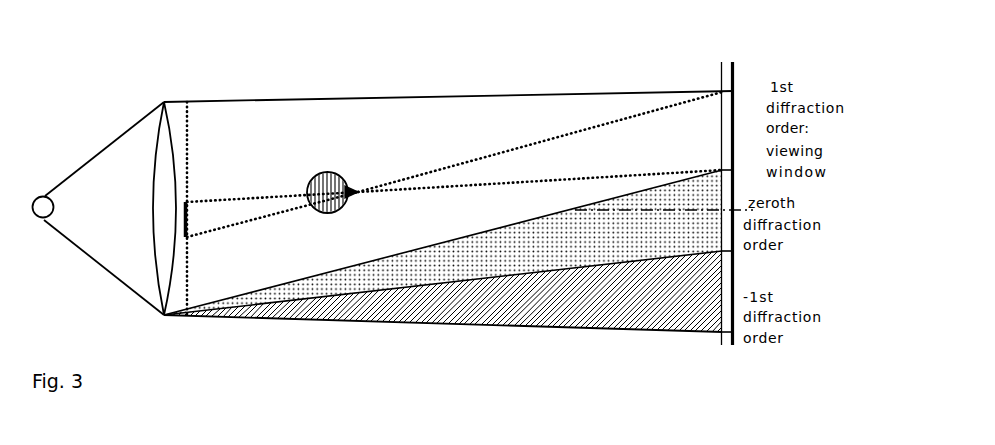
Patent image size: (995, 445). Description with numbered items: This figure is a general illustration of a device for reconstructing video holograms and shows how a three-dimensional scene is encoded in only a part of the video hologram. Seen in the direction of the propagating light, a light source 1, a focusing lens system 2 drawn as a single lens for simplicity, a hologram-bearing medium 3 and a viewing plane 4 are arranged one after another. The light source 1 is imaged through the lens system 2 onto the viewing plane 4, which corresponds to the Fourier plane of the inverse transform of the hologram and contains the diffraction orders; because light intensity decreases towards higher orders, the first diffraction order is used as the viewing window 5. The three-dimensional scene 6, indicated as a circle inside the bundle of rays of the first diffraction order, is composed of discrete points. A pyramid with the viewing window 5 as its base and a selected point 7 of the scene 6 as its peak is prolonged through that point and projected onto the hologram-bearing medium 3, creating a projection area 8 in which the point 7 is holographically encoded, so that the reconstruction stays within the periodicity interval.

The light source 1 is at (34, 205).
The focusing lens system 2 is at (165, 142).
The hologram-bearing medium 3 is at (188, 263).
The viewing plane 4 is at (730, 182).
The viewing window 5 is at (741, 203).
The three-dimensional scene 6 is at (327, 170).
The point 7 is at (355, 202).
The projection area 8 is at (195, 219).